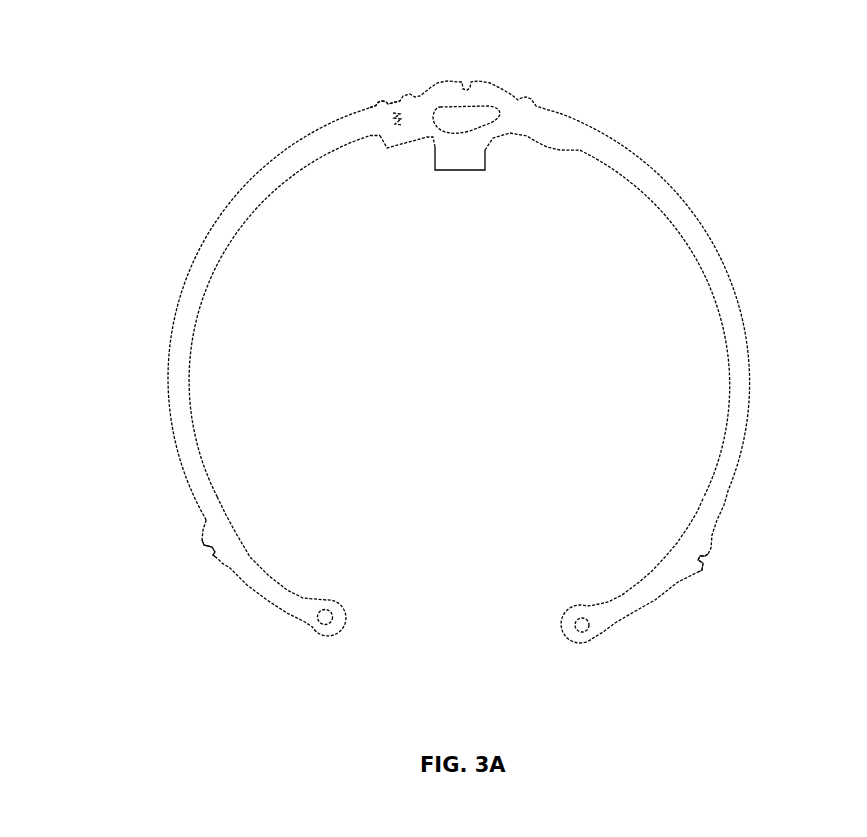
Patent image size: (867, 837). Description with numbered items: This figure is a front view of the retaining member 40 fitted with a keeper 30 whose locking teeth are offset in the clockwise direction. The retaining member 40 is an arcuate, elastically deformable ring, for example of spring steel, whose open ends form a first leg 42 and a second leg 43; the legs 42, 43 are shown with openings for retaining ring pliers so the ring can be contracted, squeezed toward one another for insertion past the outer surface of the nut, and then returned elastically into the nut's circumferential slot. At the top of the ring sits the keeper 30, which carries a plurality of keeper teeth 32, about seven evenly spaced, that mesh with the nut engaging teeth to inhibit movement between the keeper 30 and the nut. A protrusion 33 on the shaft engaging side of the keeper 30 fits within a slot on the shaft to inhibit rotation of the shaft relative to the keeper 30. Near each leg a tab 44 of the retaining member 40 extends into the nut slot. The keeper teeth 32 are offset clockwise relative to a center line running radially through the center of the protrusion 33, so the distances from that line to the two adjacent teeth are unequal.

The keeper 30 is at (537, 128).
The keeper teeth 32 is at (372, 88).
The protrusion 33 is at (487, 154).
The retaining member 40 is at (674, 183).
The first leg 42 is at (256, 595).
The second leg 43 is at (626, 624).
The tab 44 is at (192, 525).